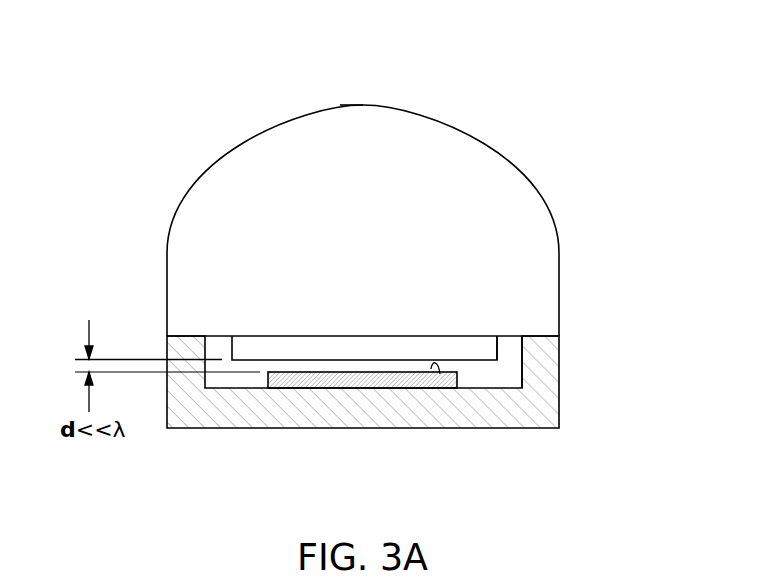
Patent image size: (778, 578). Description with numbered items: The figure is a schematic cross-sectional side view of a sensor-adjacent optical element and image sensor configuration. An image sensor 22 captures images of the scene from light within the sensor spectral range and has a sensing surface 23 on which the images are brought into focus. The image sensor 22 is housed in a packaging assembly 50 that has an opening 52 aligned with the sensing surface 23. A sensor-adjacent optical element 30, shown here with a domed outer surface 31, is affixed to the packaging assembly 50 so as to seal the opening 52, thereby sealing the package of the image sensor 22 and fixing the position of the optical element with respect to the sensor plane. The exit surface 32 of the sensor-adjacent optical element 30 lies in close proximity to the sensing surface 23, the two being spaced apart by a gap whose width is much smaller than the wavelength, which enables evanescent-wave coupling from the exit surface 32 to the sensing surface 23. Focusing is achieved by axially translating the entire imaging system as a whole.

The image sensor 22 is at (363, 380).
The sensing surface 23 is at (440, 374).
The sensor-adjacent optical element 30 is at (470, 165).
The surface 31 is at (340, 105).
The exit surface 32 is at (317, 359).
The packaging assembly 50 is at (523, 428).
The opening 52 is at (512, 348).